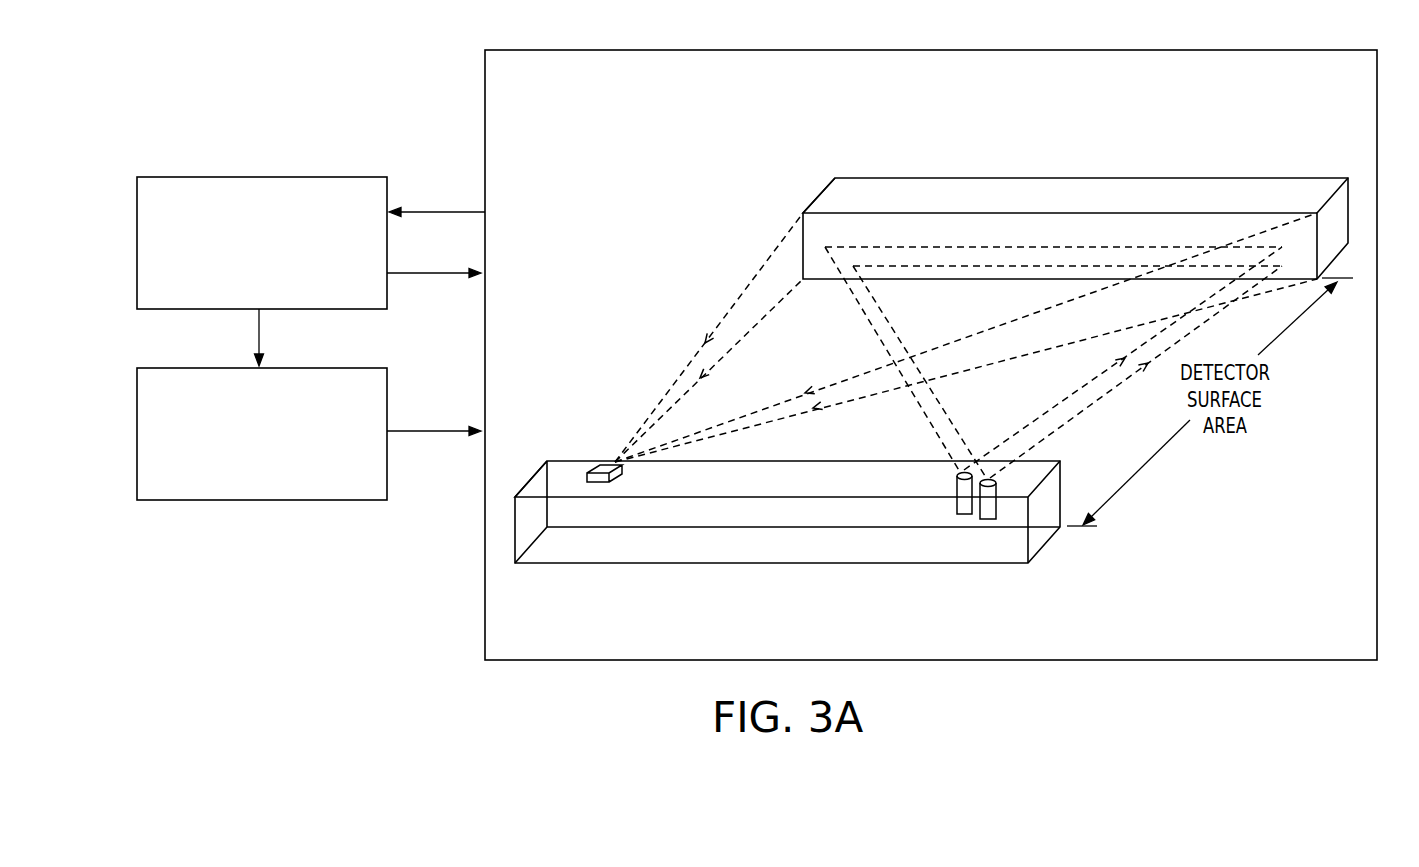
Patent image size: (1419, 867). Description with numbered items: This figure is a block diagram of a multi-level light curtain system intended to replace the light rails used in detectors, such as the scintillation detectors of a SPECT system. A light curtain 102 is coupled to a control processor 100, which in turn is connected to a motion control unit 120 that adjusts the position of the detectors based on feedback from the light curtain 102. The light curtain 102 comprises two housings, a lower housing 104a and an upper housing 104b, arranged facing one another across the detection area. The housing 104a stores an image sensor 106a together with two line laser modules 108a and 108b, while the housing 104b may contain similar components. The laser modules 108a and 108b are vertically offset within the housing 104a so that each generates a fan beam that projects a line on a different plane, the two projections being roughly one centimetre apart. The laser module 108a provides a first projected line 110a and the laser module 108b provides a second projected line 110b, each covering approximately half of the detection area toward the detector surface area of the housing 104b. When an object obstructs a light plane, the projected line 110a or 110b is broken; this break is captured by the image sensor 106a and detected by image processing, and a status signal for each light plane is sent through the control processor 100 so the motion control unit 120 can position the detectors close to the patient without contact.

The control processor 100 is at (263, 177).
The motion control unit 120 is at (200, 368).
The light curtain 102 is at (953, 101).
The housing 104a is at (1045, 542).
The housing 104b is at (1215, 178).
The image sensor 106a is at (606, 466).
The laser module 108a is at (965, 514).
The laser module 108b is at (992, 520).
The first projected line 110a is at (1048, 410).
The second projected line 110b is at (1107, 394).